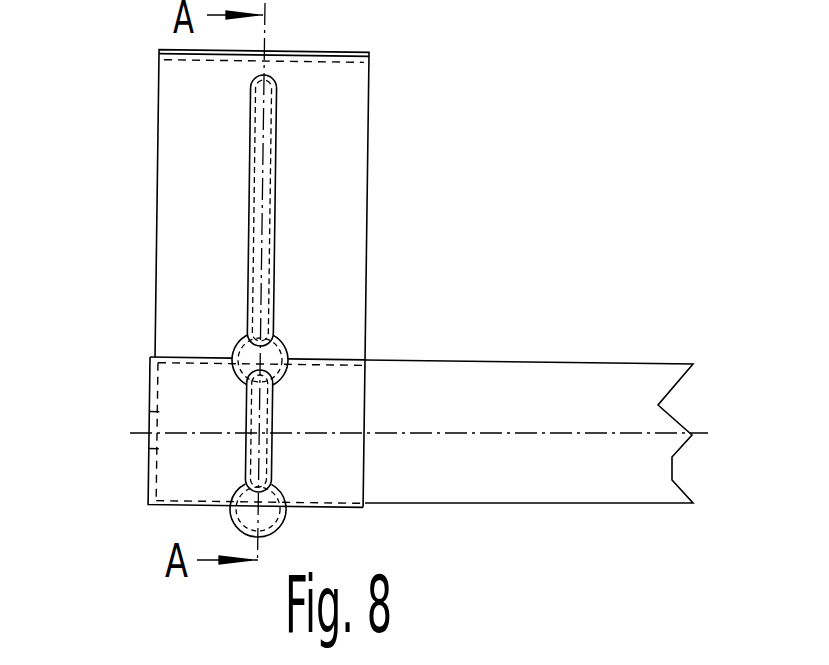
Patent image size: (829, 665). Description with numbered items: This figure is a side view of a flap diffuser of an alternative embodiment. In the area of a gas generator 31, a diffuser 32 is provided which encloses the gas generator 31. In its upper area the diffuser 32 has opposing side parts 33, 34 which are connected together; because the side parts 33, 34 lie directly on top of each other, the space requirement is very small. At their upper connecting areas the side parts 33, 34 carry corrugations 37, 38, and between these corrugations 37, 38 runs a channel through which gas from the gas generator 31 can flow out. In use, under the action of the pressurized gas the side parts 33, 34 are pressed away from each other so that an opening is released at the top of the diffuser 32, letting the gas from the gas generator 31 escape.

The gas generator 31 is at (513, 380).
The diffuser 32 is at (155, 164).
The side part 33 is at (198, 392).
The side part 34 is at (192, 335).
The corrugation 37 is at (388, 308).
The corrugation 38 is at (278, 210).